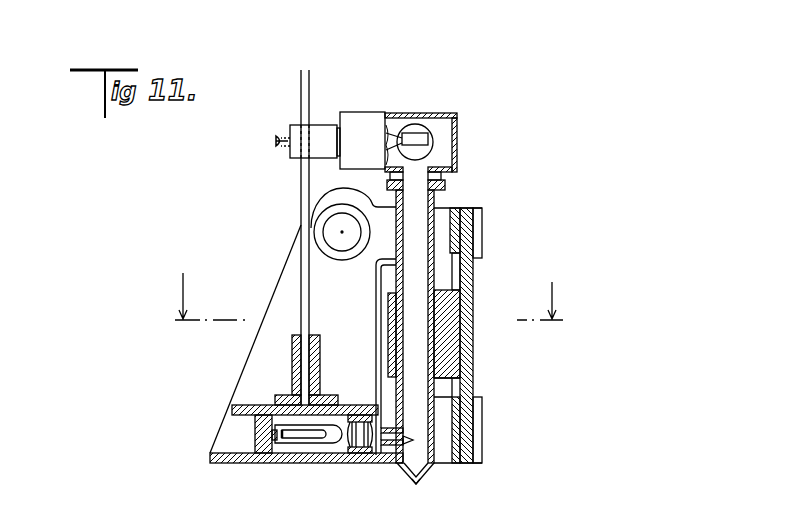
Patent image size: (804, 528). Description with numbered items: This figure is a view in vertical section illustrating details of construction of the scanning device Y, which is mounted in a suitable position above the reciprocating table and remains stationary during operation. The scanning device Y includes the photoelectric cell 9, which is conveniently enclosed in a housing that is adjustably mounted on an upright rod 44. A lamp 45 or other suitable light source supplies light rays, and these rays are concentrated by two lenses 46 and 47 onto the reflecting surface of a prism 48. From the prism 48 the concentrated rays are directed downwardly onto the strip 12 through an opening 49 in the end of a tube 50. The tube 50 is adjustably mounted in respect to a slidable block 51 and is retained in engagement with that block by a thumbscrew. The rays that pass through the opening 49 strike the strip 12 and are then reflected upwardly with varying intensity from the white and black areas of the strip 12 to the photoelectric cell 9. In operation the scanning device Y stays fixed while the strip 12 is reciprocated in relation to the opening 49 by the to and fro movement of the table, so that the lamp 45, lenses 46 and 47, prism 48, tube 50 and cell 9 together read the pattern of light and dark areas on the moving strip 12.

The photoelectric cell 9 is at (413, 127).
The strip 12 is at (366, 303).
The upright rod 44 is at (301, 177).
The lamp 45 is at (310, 444).
The lens 46 is at (362, 454).
The lens 47 is at (378, 405).
The prism 48 is at (403, 466).
The opening 49 is at (420, 485).
The tube 50 is at (376, 279).
The slidable block 51 is at (448, 344).
The scanning device Y is at (473, 188).